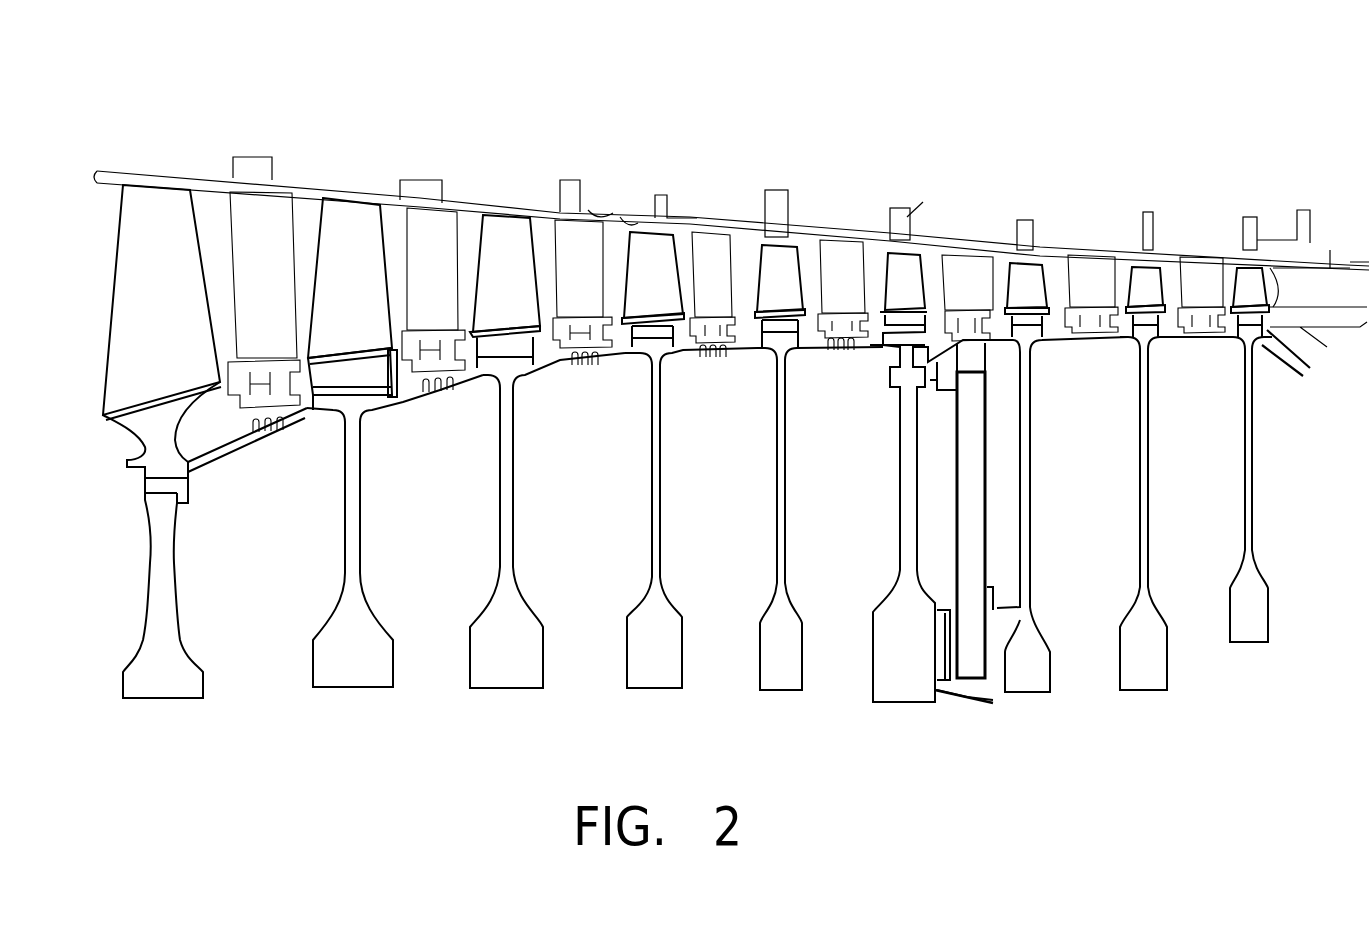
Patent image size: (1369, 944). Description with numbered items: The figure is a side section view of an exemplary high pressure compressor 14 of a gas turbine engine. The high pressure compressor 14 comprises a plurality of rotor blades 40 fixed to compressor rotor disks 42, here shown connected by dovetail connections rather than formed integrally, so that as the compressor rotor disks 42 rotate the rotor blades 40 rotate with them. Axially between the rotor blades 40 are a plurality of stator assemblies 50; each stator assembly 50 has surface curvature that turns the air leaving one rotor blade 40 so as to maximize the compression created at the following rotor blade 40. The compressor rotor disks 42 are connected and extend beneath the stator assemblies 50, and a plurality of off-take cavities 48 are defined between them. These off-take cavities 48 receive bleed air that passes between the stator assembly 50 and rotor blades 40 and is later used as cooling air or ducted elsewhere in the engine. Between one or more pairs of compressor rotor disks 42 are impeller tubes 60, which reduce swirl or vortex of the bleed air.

The high pressure compressor 14 is at (1038, 96).
The rotor blades 40 is at (142, 208).
The compressor rotor disks 42 is at (175, 567).
The off-take cavities 48 is at (266, 711).
The stator assemblies 50 is at (248, 210).
The impeller tubes 60 is at (970, 420).